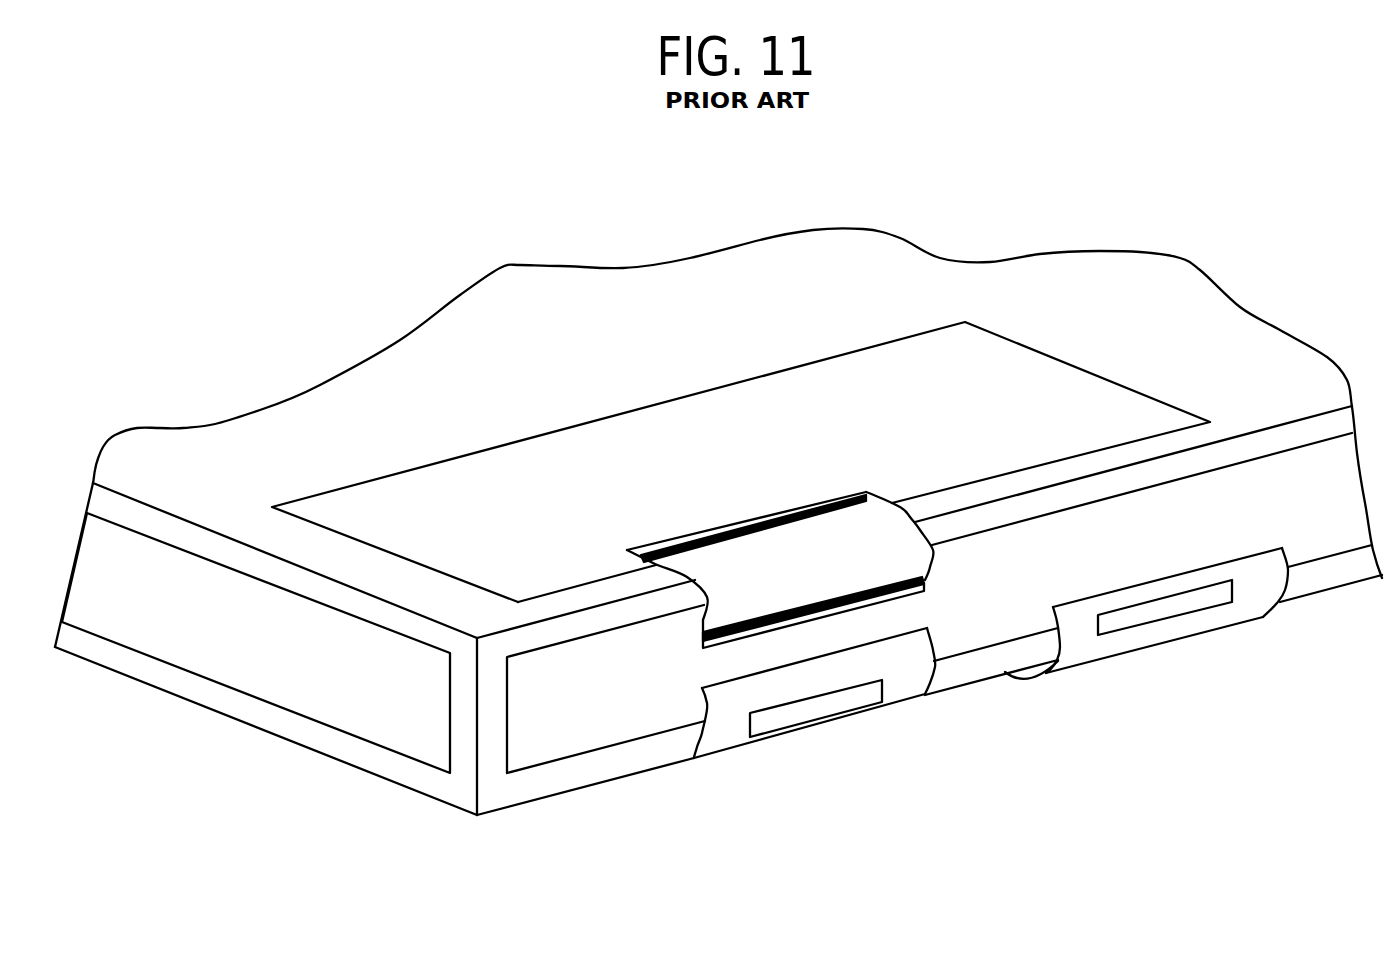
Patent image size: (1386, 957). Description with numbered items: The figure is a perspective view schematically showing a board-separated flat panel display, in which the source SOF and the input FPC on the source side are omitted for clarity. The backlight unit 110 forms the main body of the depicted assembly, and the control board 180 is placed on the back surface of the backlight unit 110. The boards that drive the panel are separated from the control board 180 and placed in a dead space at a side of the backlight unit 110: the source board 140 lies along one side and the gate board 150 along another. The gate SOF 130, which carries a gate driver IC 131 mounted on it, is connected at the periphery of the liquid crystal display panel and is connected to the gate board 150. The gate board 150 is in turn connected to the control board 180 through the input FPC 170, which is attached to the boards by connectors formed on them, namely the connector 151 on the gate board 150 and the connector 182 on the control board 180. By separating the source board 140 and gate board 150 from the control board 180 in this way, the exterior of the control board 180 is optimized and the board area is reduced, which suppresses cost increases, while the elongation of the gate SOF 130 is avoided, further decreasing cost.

The backlight unit 110 is at (438, 783).
The gate SOF 130 is at (1067, 657).
The gate driver IC 131 is at (812, 708).
The source board 140 is at (277, 685).
The gate board 150 is at (567, 728).
The connector 151 is at (934, 566).
The input FPC 170 is at (903, 523).
The control board 180 is at (677, 417).
The connector 182 is at (811, 503).